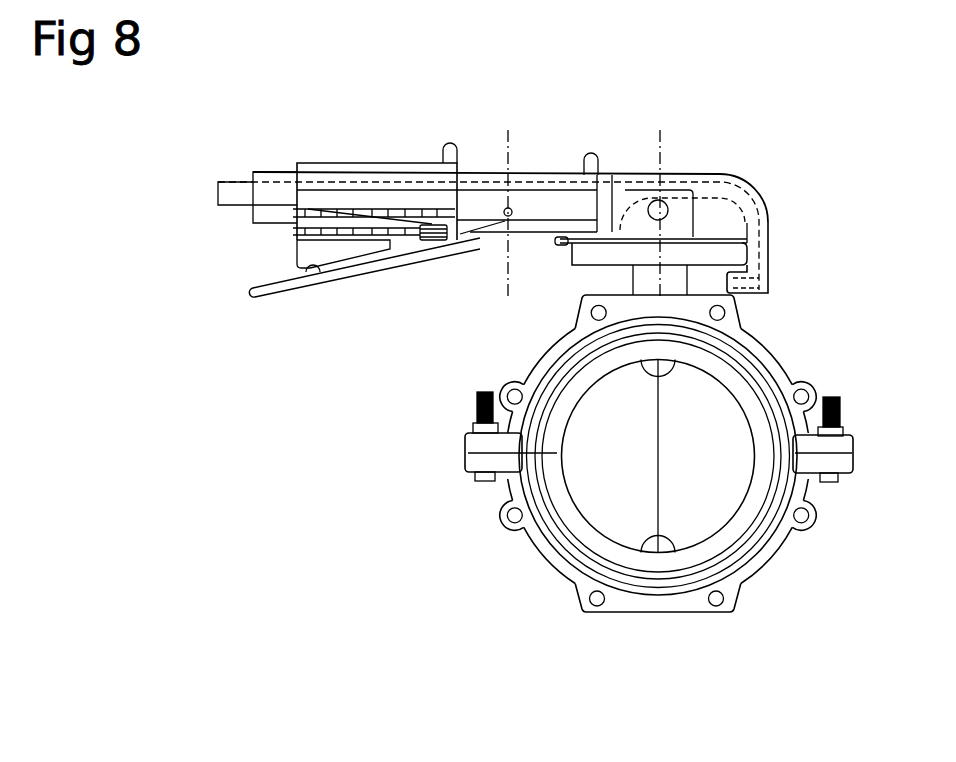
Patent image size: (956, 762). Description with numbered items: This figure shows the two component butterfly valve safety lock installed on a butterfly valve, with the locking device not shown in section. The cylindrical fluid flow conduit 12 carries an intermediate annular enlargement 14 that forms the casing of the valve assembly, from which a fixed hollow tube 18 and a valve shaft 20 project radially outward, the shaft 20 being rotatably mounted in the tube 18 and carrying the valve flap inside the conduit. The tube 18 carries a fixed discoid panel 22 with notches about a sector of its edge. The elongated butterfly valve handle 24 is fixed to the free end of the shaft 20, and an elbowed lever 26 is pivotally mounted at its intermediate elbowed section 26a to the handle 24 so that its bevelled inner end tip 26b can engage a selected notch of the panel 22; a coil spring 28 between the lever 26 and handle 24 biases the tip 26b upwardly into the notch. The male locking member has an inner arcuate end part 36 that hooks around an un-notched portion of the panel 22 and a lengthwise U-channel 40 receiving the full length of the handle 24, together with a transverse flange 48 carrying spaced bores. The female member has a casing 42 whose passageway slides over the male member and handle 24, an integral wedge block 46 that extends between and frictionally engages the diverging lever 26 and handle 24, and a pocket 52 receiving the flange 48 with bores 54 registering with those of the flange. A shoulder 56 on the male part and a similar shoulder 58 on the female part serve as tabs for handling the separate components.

The cylindrical fluid flow conduit 12 is at (598, 515).
The intermediate annular enlargement 14 is at (778, 362).
The fixed hollow tube 18 is at (640, 277).
The valve shaft 20 is at (667, 242).
The fixed discoid panel 22 is at (722, 245).
The butterfly valve handle 24 is at (222, 187).
The elbowed lever 26 is at (256, 300).
The intermediate elbowed section 26a is at (510, 245).
The bevelled inner end tip 26b is at (550, 245).
The coil spring 28 is at (432, 242).
The inner arcuate end part 36 is at (772, 250).
The U-channel 40 is at (270, 172).
The casing 42 is at (405, 165).
The wedge block 46 is at (320, 272).
The transverse flange 48 is at (260, 224).
The pocket 52 is at (293, 238).
The bores 54 is at (375, 151).
The shoulder 56 is at (595, 156).
The shoulder 58 is at (455, 152).